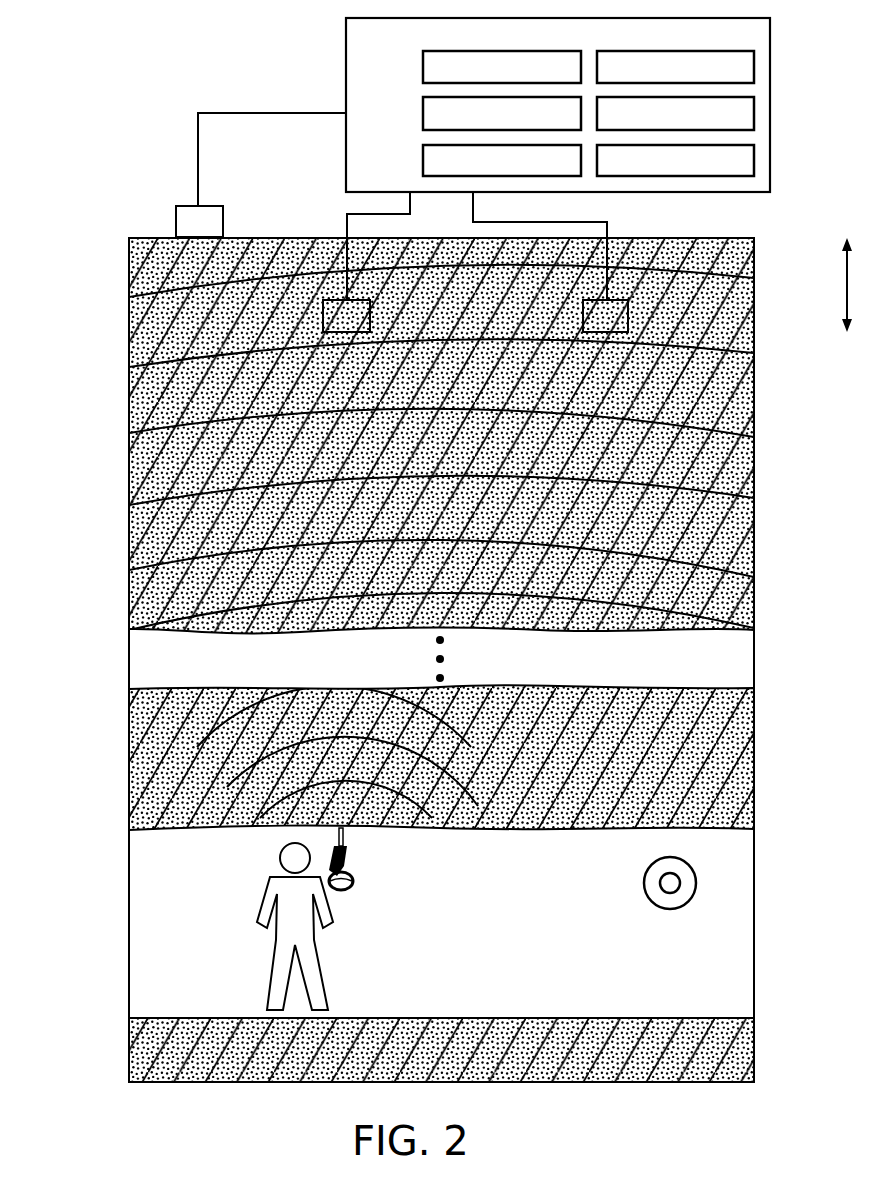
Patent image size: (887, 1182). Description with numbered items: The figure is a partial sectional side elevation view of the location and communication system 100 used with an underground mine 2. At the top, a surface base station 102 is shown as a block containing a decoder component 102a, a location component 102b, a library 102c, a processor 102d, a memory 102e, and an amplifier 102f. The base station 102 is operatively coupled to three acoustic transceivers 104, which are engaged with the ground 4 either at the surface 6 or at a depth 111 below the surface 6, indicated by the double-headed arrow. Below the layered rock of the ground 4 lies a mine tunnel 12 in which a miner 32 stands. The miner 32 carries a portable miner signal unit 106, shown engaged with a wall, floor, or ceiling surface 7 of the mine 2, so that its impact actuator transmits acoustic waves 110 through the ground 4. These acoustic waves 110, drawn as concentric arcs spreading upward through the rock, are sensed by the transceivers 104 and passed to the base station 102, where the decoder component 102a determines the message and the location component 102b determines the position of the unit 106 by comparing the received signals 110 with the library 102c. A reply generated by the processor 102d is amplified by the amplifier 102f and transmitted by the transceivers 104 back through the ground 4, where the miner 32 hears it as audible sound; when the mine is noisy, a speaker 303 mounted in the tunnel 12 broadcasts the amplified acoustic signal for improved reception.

The mine 2 is at (73, 246).
The ground 4 is at (129, 268).
The surface 6 is at (147, 238).
The wall, floor, or ceiling surface 7 is at (343, 829).
The mine tunnel 12 is at (156, 946).
The miner 32 is at (254, 898).
The location and communication system 100 is at (178, 63).
The base station 102 is at (346, 42).
The decoder component 102a is at (423, 67).
The location component 102b is at (423, 113).
The library 102c is at (423, 160).
The processor 102d is at (754, 67).
The memory 102e is at (754, 113).
The amplifier 102f is at (754, 160).
The acoustic transceivers 104 is at (402, 222).
The miner signal unit 106 is at (355, 882).
The acoustic waves 110 is at (439, 549).
The depth 111 is at (846, 285).
The speaker 303 is at (640, 905).